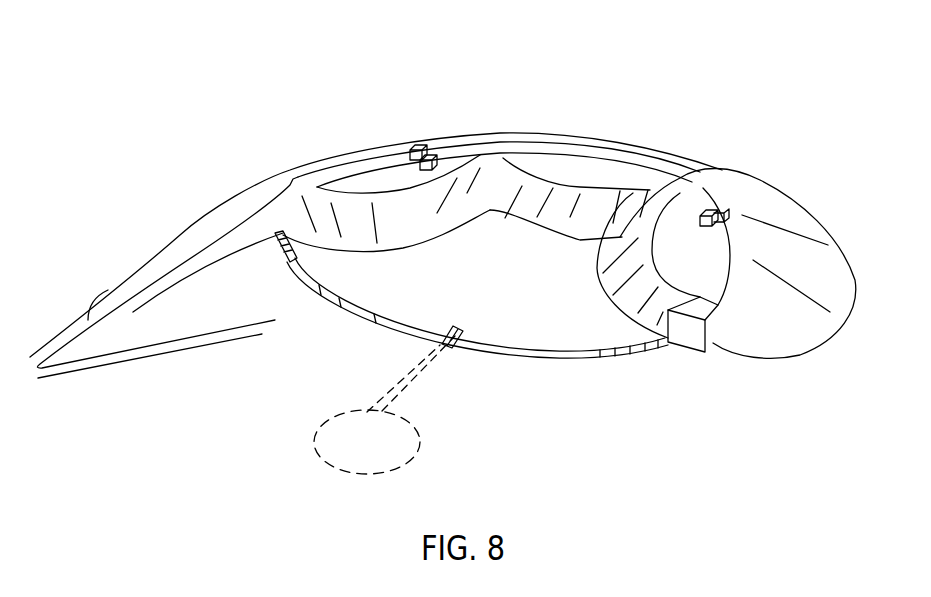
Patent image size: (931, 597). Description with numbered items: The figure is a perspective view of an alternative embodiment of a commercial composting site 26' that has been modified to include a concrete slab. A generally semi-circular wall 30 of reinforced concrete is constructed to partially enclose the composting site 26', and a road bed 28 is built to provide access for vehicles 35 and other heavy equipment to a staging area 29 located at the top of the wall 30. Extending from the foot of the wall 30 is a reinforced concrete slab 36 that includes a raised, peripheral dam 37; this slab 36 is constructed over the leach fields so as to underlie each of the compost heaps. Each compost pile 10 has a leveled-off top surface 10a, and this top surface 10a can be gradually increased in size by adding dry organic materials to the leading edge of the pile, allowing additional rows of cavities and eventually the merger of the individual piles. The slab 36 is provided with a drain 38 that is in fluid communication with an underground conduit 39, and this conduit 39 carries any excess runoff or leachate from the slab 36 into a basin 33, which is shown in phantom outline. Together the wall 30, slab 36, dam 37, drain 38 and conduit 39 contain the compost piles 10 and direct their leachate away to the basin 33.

The compost pile 10 is at (347, 188).
The top surface 10a is at (645, 183).
The commercial composting site 26' is at (519, 49).
The road bed 28 is at (346, 162).
The staging area 29 is at (503, 133).
The wall 30 is at (203, 266).
The basin 33 is at (418, 443).
The vehicles 35 is at (412, 146).
The reinforced concrete slab 36 is at (540, 340).
The peripheral dam 37 is at (628, 355).
The drain 38 is at (457, 330).
The underground conduit 39 is at (413, 377).